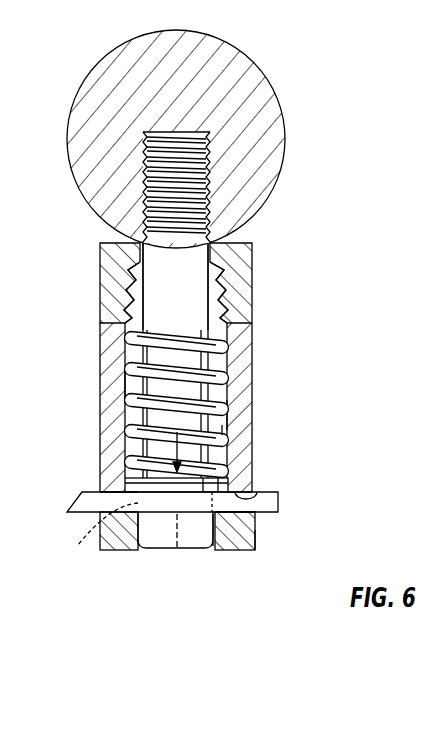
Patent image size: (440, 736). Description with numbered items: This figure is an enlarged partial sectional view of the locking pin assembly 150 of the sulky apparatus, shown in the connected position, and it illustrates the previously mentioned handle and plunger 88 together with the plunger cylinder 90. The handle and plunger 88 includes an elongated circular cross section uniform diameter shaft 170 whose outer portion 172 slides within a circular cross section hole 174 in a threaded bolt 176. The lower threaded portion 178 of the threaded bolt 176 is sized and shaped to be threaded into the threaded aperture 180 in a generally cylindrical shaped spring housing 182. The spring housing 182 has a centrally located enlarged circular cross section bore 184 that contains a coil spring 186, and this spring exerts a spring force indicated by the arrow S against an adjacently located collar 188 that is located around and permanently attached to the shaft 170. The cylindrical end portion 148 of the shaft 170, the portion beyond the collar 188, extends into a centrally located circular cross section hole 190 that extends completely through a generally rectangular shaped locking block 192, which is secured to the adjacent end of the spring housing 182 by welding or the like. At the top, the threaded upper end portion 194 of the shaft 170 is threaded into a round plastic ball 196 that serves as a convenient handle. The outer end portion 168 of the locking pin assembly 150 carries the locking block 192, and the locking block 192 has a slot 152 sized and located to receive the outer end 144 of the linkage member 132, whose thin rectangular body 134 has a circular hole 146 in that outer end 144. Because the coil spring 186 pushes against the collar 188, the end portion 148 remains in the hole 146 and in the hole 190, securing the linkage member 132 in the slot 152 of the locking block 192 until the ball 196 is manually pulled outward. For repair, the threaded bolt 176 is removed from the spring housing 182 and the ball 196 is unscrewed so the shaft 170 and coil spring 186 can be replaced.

The handle and plunger 88 is at (340, 137).
The plunger cylinder 90 is at (266, 370).
The linkage member 132 is at (84, 507).
The body 134 is at (103, 500).
The outer end 144 is at (230, 503).
The circular hole 146 is at (100, 536).
The cylindrical end portion 148 is at (162, 528).
The locking pin assembly 150 is at (270, 272).
The slot 152 is at (256, 492).
The outer end portion 168 is at (255, 527).
The shaft 170 is at (190, 420).
The outer portion 172 is at (192, 252).
The circular cross section hole 174 is at (148, 278).
The threaded bolt 176 is at (238, 270).
The lower threaded portion 178 is at (228, 320).
The threaded aperture 180 is at (125, 303).
The spring housing 182 is at (229, 414).
The bore 184 is at (130, 384).
The coil spring 186 is at (137, 372).
The collar 188 is at (106, 452).
The circular cross section hole 190 is at (210, 523).
The locking block 192 is at (257, 538).
The threaded upper end portion 194 is at (143, 180).
The ball 196 is at (92, 66).
The spring force arrow S is at (223, 430).